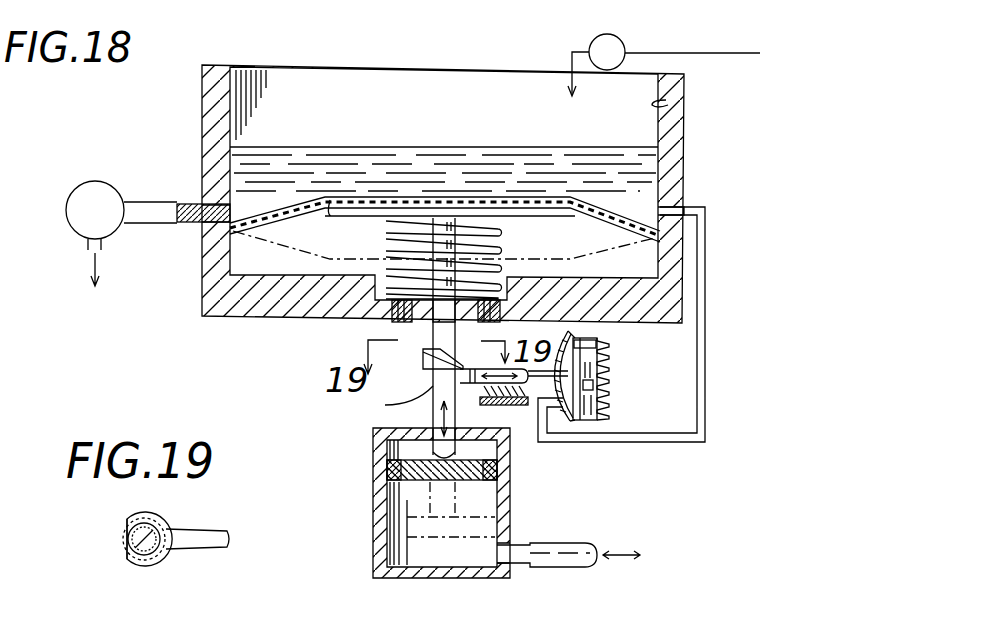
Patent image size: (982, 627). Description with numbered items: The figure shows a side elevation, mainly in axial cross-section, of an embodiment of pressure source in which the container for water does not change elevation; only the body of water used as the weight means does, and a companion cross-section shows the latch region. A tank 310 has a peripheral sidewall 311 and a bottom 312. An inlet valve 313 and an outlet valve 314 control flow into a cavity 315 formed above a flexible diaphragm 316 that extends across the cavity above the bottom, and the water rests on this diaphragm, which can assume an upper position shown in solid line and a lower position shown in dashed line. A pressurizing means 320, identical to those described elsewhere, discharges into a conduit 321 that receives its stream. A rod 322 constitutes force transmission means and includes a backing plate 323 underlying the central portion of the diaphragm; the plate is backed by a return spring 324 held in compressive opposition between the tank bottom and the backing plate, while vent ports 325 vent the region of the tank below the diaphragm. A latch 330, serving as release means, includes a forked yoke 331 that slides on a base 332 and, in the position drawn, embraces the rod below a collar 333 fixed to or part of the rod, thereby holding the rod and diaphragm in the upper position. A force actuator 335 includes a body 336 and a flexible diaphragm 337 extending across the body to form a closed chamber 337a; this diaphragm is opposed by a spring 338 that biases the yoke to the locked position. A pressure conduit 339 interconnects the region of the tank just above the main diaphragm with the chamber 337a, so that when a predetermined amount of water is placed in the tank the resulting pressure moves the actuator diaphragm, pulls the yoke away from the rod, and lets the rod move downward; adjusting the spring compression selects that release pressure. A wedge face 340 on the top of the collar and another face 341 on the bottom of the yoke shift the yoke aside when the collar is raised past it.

In FIG. 18, the tank 310 is at (692, 148).
In FIG. 18, the peripheral sidewall 311 is at (670, 104).
In FIG. 18, the bottom 312 is at (648, 273).
In FIG. 18, the inlet valve 313 is at (589, 50).
In FIG. 18, the outlet valve 314 is at (88, 182).
In FIG. 18, the cavity 315 is at (461, 133).
In FIG. 18, the flexible diaphragm 316 is at (650, 225).
In FIG. 18, the pressurizing means 320 is at (527, 504).
In FIG. 18, the conduit 321 is at (530, 543).
In FIG. 18, the rod 322 is at (432, 420).
In FIG. 19, the rod 322 is at (132, 546).
In FIG. 18, the backing plate 323 is at (357, 217).
In FIG. 18, the return spring 324 is at (503, 234).
In FIG. 18, the vent ports 325 is at (400, 323).
In FIG. 18, the latch 330 is at (422, 372).
In FIG. 19, the latch 330 is at (171, 532).
In FIG. 19, the forked yoke 331 is at (223, 530).
In FIG. 18, the base 332 is at (528, 404).
In FIG. 18, the collar 333 is at (423, 357).
In FIG. 19, the collar 333 is at (148, 512).
In FIG. 18, the force actuator 335 is at (638, 375).
In FIG. 18, the body 336 is at (592, 421).
In FIG. 18, the flexible diaphragm 337 is at (598, 399).
In FIG. 18, the closed chamber 337a is at (598, 343).
In FIG. 18, the spring 338 is at (598, 382).
In FIG. 18, the pressure conduit 339 is at (706, 231).
In FIG. 18, the wedge face 340 is at (466, 354).
In FIG. 18, the face 341 is at (391, 403).